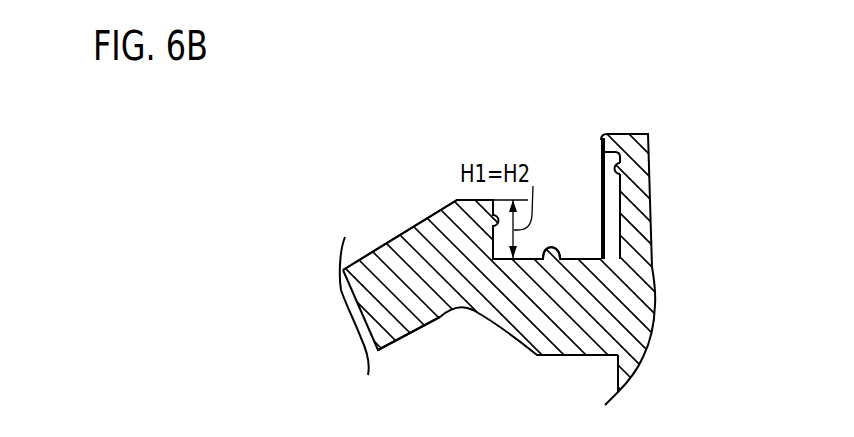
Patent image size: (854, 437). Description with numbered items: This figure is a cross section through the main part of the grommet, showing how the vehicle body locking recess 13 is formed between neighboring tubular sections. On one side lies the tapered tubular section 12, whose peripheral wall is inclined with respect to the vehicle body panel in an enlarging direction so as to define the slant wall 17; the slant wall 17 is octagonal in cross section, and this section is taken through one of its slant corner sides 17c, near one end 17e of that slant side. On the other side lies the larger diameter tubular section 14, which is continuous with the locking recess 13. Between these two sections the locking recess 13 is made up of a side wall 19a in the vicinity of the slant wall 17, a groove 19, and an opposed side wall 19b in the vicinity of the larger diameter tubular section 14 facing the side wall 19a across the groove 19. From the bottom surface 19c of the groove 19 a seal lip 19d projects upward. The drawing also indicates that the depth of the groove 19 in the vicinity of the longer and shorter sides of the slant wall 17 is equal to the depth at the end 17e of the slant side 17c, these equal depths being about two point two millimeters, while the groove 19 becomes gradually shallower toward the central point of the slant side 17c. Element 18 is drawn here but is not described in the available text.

The tapered tubular section 12 is at (405, 338).
The vehicle body locking recess 13 is at (527, 150).
The larger diameter tubular section 14 is at (641, 206).
The slant wall 17 is at (421, 224).
The slant corner side 17c is at (390, 242).
The end of slant side 17e is at (425, 219).
The retaining wall 18 is at (632, 134).
The groove 19 is at (547, 225).
The side wall 19a is at (456, 199).
The side wall 19b is at (625, 166).
The bottom surface 19c is at (578, 259).
The seal lip 19d is at (556, 250).